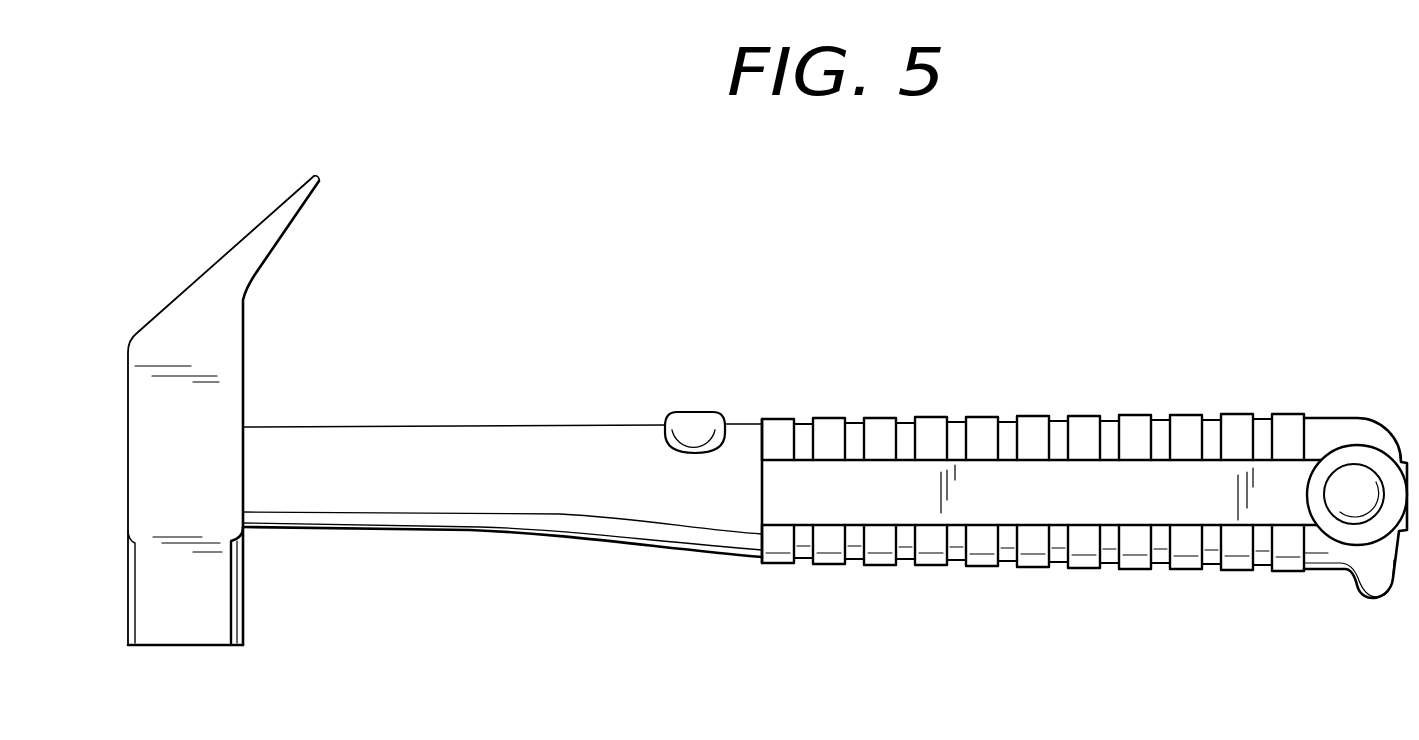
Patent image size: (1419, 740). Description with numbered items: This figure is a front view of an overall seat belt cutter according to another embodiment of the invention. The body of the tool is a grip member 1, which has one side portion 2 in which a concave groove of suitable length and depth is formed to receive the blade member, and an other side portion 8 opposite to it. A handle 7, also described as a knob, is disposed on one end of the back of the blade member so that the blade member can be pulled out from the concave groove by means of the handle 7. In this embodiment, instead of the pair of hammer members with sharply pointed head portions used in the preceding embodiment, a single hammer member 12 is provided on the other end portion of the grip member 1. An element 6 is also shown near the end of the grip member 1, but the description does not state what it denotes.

The grip member 1 is at (823, 570).
The one side portion 2 is at (930, 423).
The hanging hole 6 is at (1350, 480).
The handle 7 is at (693, 418).
The other side portion 8 is at (420, 447).
The hammer member 12 is at (175, 342).